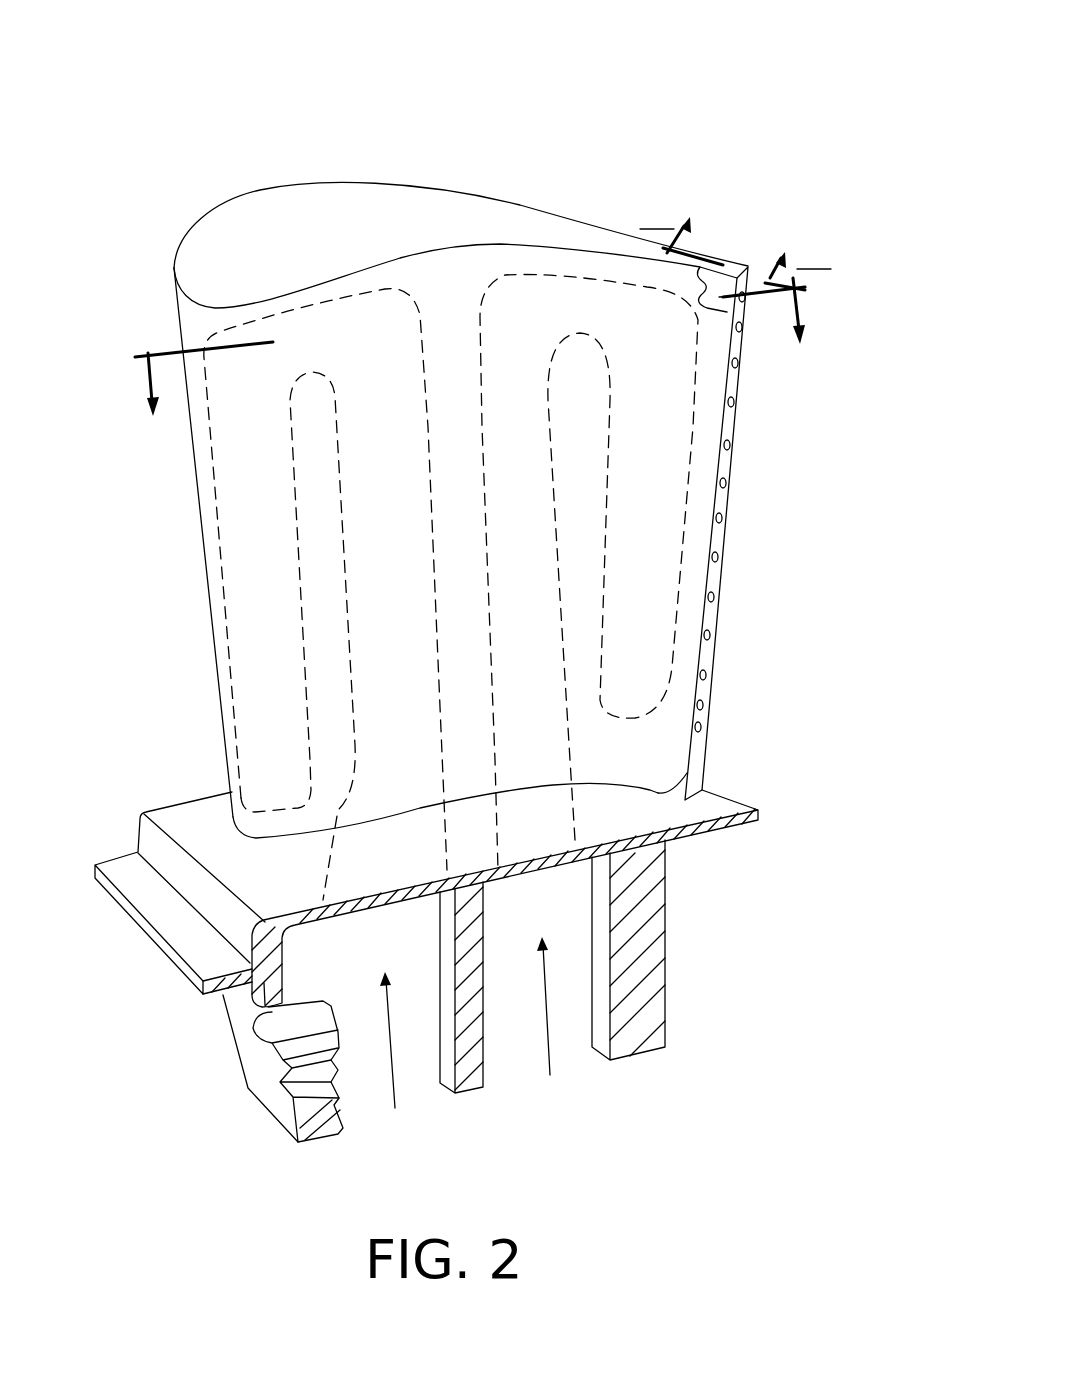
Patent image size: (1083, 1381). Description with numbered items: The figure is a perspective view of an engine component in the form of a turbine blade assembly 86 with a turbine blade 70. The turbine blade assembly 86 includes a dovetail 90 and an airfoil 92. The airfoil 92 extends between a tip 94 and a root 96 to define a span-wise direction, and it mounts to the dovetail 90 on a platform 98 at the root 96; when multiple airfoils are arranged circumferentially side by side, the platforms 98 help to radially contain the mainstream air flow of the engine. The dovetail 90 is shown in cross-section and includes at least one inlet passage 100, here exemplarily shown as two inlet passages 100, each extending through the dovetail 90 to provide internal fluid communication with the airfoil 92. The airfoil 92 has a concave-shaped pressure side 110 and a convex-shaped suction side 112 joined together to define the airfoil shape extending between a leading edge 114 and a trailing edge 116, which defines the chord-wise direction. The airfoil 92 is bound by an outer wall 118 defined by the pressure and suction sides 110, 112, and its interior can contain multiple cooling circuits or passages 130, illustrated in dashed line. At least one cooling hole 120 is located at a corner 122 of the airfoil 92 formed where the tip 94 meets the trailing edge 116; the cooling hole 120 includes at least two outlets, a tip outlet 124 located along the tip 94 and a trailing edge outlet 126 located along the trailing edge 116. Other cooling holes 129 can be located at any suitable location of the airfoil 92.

The turbine blade 70 is at (260, 580).
The turbine blade assembly 86 is at (665, 84).
The dovetail 90 is at (255, 1058).
The airfoil 92 is at (299, 170).
The tip 94 is at (247, 240).
The root 96 is at (688, 775).
The platform 98 is at (188, 812).
The inlet passage 100 is at (423, 1114).
The pressure side 110 is at (240, 308).
The suction side 112 is at (492, 192).
The leading edge 114 is at (188, 303).
The trailing edge 116 is at (720, 627).
The outer wall 118 is at (488, 592).
The cooling hole 120 is at (698, 315).
The corner 122 is at (763, 249).
The tip outlet 124 is at (718, 255).
The trailing edge outlet 126 is at (746, 299).
The cooling holes 129 is at (723, 520).
The cooling circuits or passages 130 is at (265, 658).